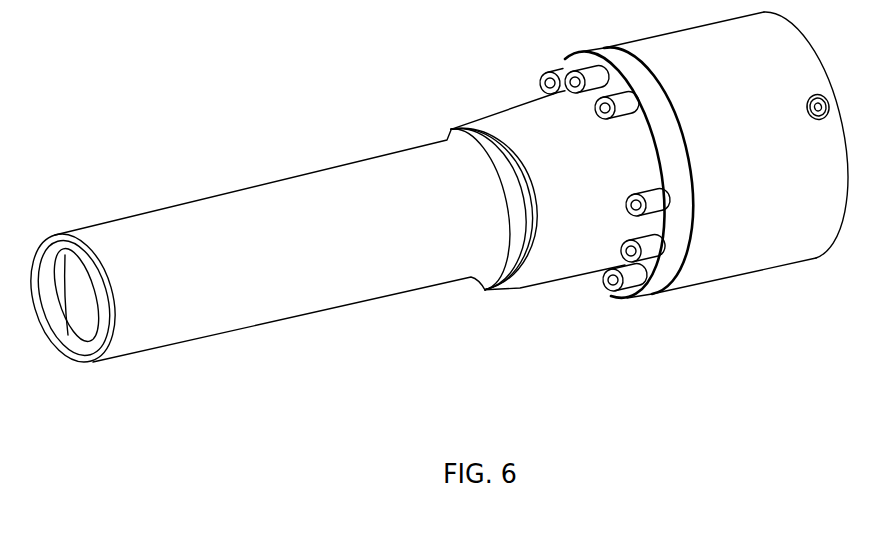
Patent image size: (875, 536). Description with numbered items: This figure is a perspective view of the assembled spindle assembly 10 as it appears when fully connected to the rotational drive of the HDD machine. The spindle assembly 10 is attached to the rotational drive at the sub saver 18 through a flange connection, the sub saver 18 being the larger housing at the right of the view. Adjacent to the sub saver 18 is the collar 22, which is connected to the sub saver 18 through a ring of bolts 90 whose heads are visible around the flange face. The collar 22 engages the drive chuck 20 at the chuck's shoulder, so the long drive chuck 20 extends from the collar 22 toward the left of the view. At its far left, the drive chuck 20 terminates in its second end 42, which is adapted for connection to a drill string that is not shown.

The spindle assembly 10 is at (375, 113).
The sub saver 18 is at (757, 223).
The drive chuck 20 is at (210, 230).
The collar 22 is at (568, 247).
The second end 42 is at (54, 237).
The bolts 90 is at (542, 75).